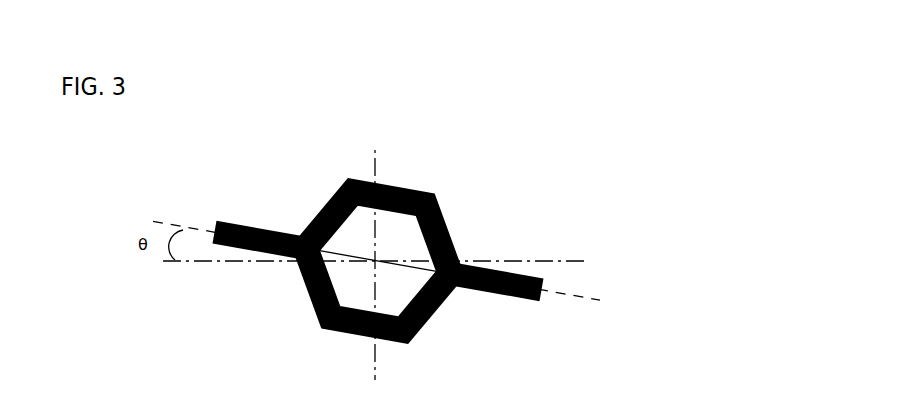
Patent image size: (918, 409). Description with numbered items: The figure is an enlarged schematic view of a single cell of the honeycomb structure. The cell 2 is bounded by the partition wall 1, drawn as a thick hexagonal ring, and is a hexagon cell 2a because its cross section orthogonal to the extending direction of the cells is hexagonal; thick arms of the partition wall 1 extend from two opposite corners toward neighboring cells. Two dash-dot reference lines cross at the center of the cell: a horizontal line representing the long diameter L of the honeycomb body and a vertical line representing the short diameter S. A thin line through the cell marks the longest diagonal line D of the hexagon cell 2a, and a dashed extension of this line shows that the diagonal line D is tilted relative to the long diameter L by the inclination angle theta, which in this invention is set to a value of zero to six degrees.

The partition wall 1 is at (445, 212).
The cell 2 is at (404, 285).
The hexagon cell 2a is at (489, 280).
The short diameter S is at (377, 167).
The long diameter L is at (570, 259).
The diagonal line D is at (340, 250).